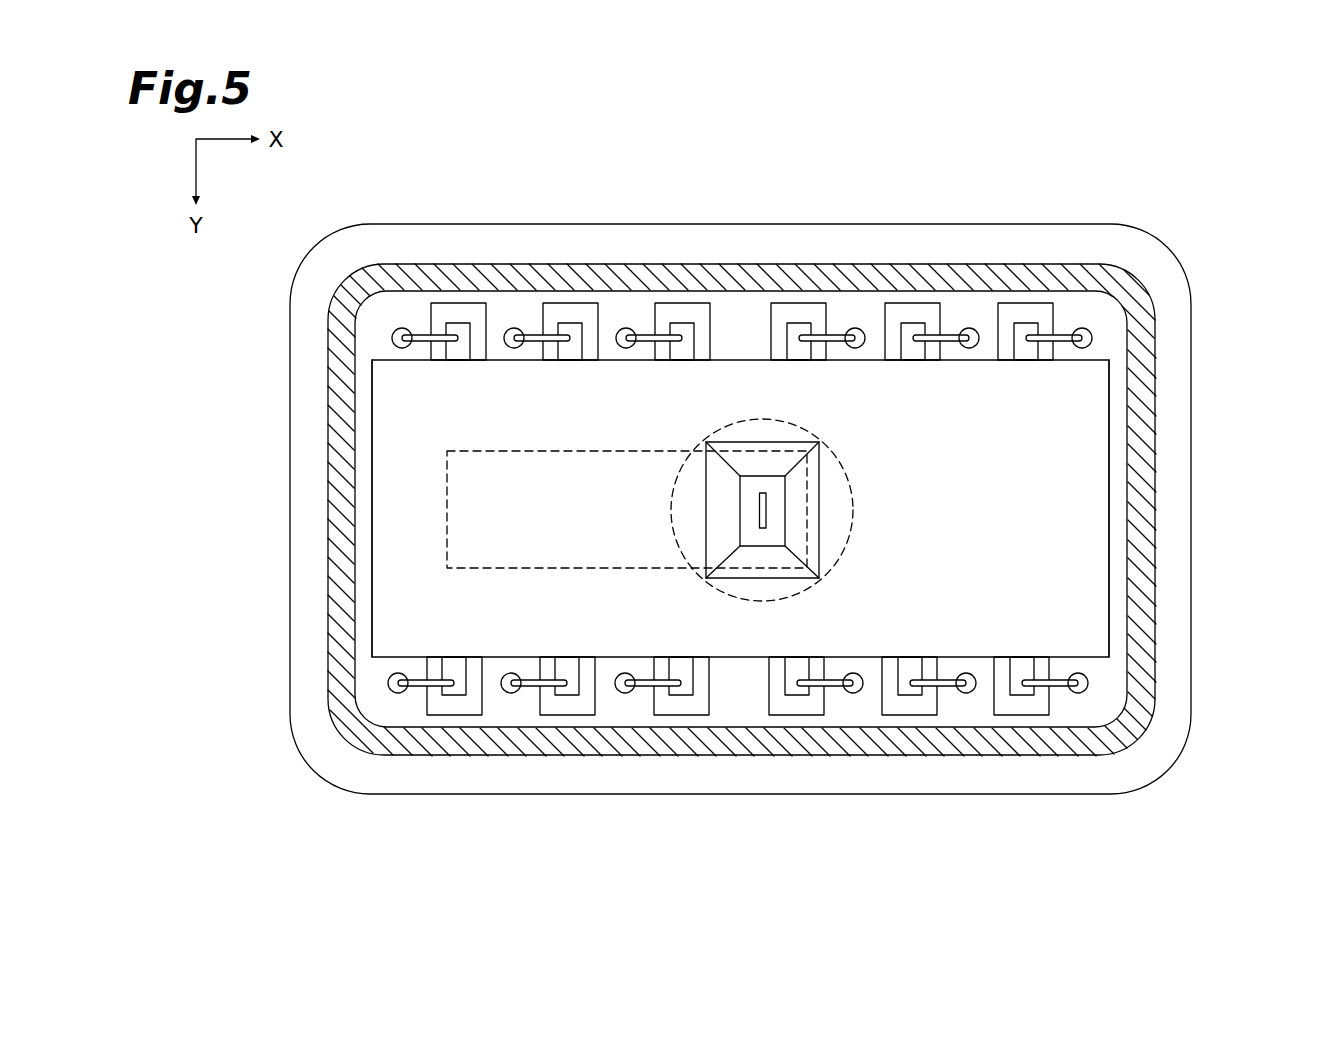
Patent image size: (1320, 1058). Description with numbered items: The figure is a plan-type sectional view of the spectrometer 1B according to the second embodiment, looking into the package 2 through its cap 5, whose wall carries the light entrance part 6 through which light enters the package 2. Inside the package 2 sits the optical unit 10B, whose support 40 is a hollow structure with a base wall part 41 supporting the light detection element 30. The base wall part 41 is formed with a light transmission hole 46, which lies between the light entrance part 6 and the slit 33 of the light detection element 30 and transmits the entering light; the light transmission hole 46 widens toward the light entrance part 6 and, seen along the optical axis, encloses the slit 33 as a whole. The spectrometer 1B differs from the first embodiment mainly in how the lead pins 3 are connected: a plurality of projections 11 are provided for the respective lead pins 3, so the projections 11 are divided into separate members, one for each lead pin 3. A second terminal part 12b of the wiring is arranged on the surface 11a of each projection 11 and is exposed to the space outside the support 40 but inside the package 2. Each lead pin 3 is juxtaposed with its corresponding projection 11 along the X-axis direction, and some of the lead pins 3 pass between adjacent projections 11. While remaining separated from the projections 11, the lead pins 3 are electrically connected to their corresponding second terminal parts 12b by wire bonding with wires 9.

The spectrometer 1B is at (1166, 166).
The package 2 is at (752, 264).
The lead pin 3 is at (402, 328).
The cap 5 is at (745, 741).
The light entrance part 6 is at (795, 510).
The wire 9 is at (422, 342).
The optical unit 10B is at (1110, 386).
The projection 11 is at (462, 305).
The surface of the projection 11a is at (572, 312).
The second terminal part 12b is at (460, 352).
The light detection element 30 is at (447, 551).
The slit 33 is at (762, 522).
The support 40 is at (372, 493).
The base wall part 41 is at (1078, 488).
The light transmission hole 46 is at (757, 462).